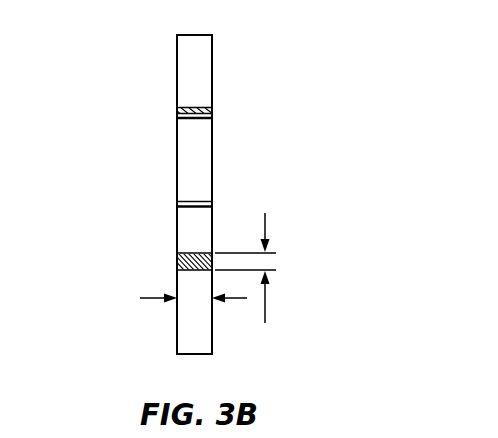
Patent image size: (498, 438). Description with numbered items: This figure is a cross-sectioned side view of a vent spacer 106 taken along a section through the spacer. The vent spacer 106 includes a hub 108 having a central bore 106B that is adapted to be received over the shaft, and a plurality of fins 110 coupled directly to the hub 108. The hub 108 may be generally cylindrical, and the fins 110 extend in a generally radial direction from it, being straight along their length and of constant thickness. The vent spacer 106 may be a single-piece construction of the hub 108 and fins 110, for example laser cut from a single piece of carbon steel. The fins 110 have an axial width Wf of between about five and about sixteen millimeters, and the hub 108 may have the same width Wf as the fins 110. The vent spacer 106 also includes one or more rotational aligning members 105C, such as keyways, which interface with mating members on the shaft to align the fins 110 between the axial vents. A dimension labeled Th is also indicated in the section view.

The vent spacer 106 is at (216, 154).
The fins 110 is at (193, 61).
The hub 108 is at (196, 112).
The rotational aligning member 105C is at (199, 120).
The central bore 106B is at (192, 249).
The thickness dimension Th is at (245, 279).
The axial width of fins Wf is at (177, 297).